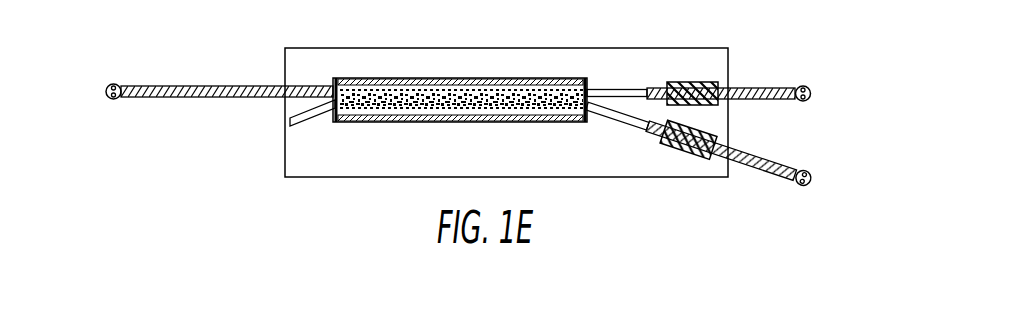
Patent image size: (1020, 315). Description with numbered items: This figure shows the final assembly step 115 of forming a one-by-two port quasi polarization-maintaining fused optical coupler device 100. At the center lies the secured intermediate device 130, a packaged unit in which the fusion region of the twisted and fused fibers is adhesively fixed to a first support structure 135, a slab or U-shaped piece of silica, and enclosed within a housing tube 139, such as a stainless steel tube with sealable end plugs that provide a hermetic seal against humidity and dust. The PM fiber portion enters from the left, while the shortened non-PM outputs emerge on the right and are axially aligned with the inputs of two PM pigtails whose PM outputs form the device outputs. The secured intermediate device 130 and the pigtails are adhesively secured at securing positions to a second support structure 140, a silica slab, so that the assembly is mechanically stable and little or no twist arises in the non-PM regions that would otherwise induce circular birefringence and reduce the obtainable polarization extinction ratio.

The quasi PM fused optical coupler device 100 is at (215, 165).
The step 115 is at (58, 117).
The second support structure 140 is at (305, 57).
The secured intermediate device 130 is at (438, 88).
The tube 139 is at (442, 86).
The first support structure 135 is at (507, 91).